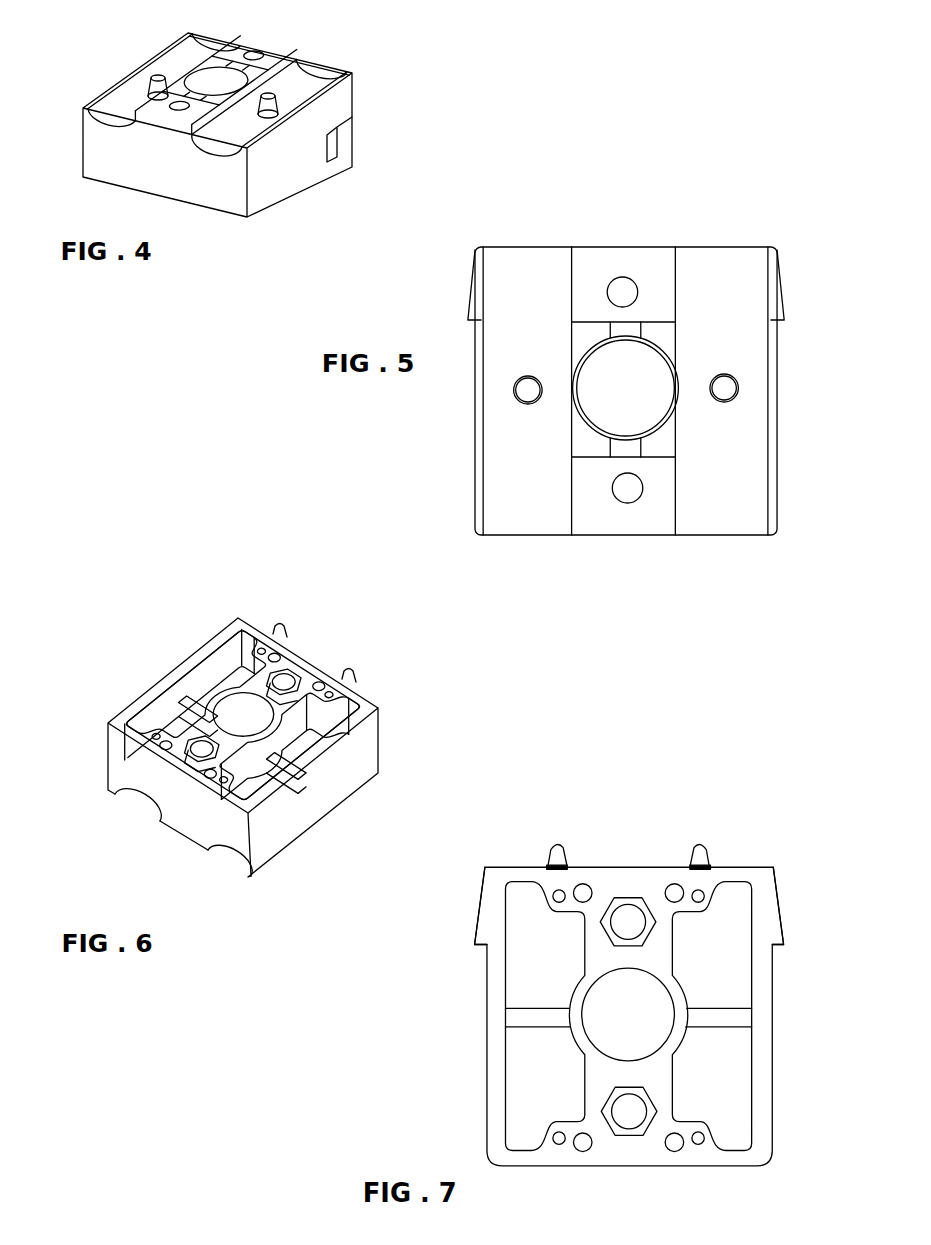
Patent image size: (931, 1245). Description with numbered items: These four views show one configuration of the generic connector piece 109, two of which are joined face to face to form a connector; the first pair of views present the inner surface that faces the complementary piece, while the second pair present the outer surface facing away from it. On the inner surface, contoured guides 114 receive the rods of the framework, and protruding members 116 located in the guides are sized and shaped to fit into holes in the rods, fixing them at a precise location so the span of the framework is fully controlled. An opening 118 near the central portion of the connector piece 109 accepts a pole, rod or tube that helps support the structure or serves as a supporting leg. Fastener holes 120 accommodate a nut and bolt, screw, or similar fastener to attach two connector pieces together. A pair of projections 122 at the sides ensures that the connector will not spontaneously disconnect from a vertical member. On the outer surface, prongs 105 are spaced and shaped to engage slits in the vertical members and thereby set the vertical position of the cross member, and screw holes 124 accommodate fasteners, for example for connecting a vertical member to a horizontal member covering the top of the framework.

In FIG. 6, the prongs 105 is at (280, 630).
In FIG. 7, the prongs 105 is at (552, 840).
In FIG. 4, the connector piece 109 is at (300, 185).
In FIG. 5, the connector piece 109 is at (727, 537).
In FIG. 6, the connector piece 109 is at (320, 827).
In FIG. 7, the connector piece 109 is at (767, 1092).
In FIG. 4, the contoured guides 114 is at (83, 117).
In FIG. 5, the contoured guides 114 is at (542, 263).
In FIG. 6, the contoured guides 114 is at (133, 790).
In FIG. 4, the protruding members 116 is at (158, 76).
In FIG. 5, the protruding members 116 is at (520, 388).
In FIG. 4, the opening 118 is at (212, 78).
In FIG. 5, the opening 118 is at (660, 377).
In FIG. 6, the opening 118 is at (240, 713).
In FIG. 7, the opening 118 is at (637, 1007).
In FIG. 4, the fastener holes 120 is at (257, 48).
In FIG. 5, the fastener holes 120 is at (617, 277).
In FIG. 6, the fastener holes 120 is at (288, 682).
In FIG. 7, the fastener holes 120 is at (613, 893).
In FIG. 4, the projections 122 is at (352, 137).
In FIG. 5, the projections 122 is at (470, 318).
In FIG. 7, the projections 122 is at (492, 918).
In FIG. 6, the screw holes 124 is at (260, 645).
In FIG. 7, the screw holes 124 is at (578, 890).